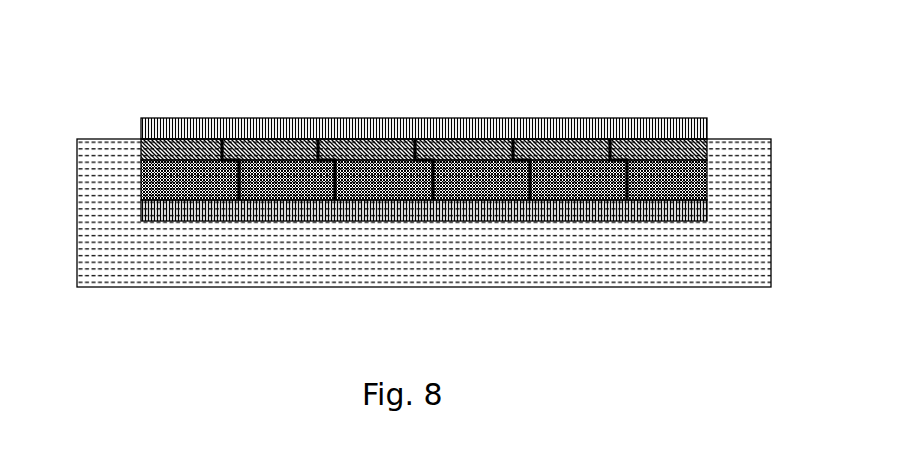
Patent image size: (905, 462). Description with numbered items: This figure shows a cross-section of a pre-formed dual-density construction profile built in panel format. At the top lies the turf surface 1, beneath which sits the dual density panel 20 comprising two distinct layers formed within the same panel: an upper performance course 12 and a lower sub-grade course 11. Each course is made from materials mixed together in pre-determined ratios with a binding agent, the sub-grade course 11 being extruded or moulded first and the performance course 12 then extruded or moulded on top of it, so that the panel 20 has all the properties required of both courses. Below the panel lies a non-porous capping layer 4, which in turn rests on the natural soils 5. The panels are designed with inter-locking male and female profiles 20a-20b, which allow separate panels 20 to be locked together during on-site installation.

The turf surface 1 is at (150, 123).
The performance course 12 is at (152, 146).
The sub-grade course 11 is at (152, 177).
The non-porous capping layer 4 is at (152, 206).
The natural soils 5 is at (282, 284).
The dual density panel 20 is at (178, 153).
The inter-locking male and female profiles 20a-20b is at (240, 150).